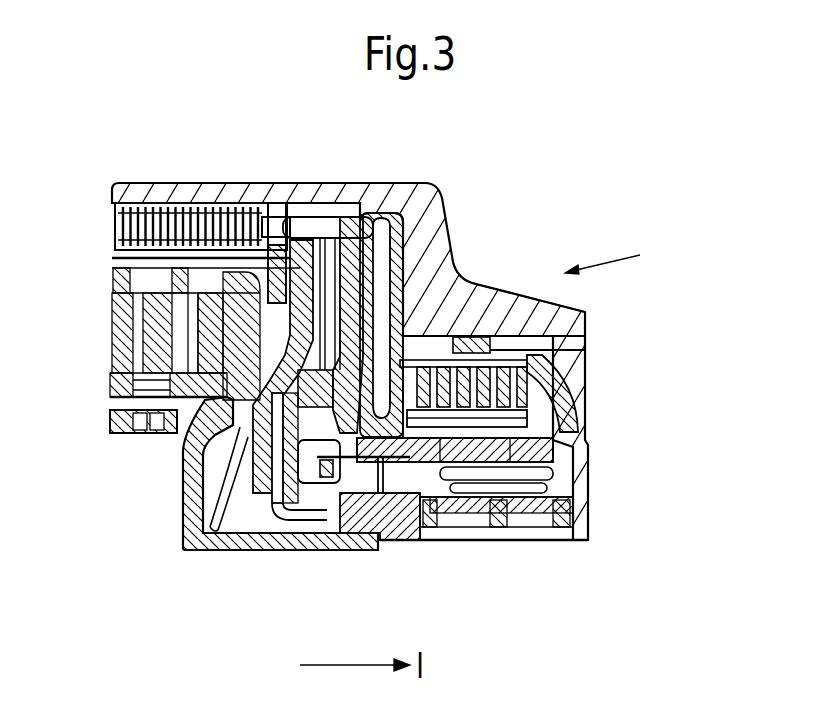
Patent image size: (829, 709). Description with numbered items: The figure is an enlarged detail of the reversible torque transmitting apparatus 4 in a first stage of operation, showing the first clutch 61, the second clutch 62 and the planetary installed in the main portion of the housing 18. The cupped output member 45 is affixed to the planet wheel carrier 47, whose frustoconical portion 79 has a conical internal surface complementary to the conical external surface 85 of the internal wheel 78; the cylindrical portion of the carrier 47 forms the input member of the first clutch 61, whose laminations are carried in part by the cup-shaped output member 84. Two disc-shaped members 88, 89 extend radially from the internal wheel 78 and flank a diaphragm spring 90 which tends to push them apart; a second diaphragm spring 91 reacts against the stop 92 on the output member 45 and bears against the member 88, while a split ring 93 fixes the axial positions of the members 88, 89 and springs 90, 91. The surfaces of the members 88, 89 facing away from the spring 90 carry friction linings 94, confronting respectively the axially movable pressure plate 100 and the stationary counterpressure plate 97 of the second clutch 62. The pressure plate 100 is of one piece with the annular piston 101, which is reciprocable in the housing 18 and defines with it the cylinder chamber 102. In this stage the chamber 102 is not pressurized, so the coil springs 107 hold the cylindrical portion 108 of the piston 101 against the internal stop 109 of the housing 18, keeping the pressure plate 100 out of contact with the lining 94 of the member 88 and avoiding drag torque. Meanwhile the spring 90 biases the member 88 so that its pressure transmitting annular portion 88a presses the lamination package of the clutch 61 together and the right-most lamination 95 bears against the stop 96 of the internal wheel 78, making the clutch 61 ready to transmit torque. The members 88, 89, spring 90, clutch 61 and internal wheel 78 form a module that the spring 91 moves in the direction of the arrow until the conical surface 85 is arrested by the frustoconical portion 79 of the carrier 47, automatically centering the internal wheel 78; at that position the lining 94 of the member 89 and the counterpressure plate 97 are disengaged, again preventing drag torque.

The reversible torque transmitting apparatus 4 is at (610, 249).
The housing 18 is at (528, 312).
The output member 45 is at (293, 517).
The planet wheel carrier 47 is at (555, 498).
The first clutch 61 is at (471, 437).
The second clutch 62 is at (340, 184).
The internal wheel 78 is at (548, 477).
The frustoconical portion 79 is at (545, 443).
The output member 84 is at (545, 372).
The conical external surface 85 is at (540, 458).
The disc-shaped member 88 is at (362, 217).
The pressure transmitting annular portion 88a is at (452, 328).
The disc-shaped member 89 is at (272, 243).
The diaphragm spring 90 is at (310, 238).
The second diaphragm spring 91 is at (397, 477).
The stop 92 is at (367, 478).
The split ring 93 is at (330, 462).
The friction lining 94 is at (235, 200).
The lamination 95 is at (522, 367).
The stop 96 is at (527, 423).
The counterpressure plate 97 is at (190, 197).
The pressure plate 100 is at (395, 240).
The piston 101 is at (395, 296).
The cylinder chamber 102 is at (415, 305).
The coil springs 107 is at (118, 222).
The cylindrical portion 108 is at (478, 315).
The internal stop 109 is at (528, 335).